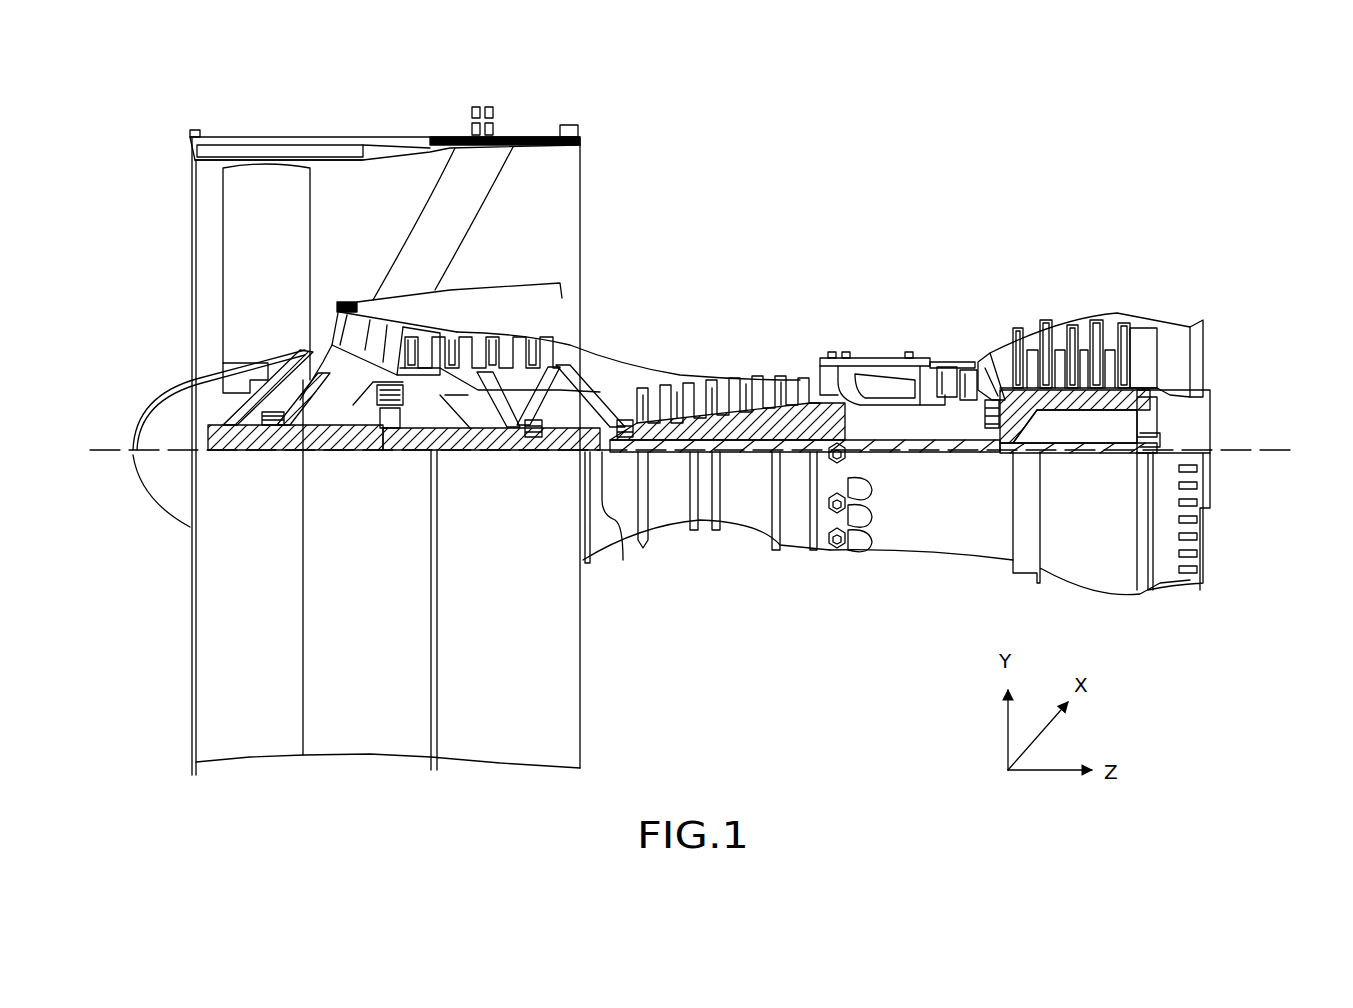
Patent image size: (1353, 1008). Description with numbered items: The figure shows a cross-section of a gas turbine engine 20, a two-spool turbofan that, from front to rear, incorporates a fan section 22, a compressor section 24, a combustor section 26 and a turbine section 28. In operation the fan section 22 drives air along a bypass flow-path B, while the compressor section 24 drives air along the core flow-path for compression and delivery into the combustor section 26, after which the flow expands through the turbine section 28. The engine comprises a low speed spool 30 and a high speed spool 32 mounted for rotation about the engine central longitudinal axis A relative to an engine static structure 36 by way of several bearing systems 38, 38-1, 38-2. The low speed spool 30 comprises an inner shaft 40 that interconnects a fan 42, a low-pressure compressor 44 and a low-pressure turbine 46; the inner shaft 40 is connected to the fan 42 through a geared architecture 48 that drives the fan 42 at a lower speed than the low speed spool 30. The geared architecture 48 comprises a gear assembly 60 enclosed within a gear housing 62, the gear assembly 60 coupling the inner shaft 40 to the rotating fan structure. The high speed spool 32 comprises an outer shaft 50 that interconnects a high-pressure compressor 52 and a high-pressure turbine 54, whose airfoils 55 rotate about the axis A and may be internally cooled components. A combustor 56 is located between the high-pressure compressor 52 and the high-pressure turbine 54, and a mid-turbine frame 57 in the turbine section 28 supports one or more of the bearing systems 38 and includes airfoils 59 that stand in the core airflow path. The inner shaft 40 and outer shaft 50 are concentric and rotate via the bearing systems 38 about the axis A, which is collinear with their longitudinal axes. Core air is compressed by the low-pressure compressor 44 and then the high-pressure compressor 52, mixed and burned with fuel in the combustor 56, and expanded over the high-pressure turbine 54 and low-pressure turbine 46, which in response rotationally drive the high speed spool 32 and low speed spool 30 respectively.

The gas turbine engine 20 is at (990, 152).
The fan section 22 is at (430, 114).
The compressor section 24 is at (440, 249).
The combustor section 26 is at (925, 249).
The turbine section 28 is at (1145, 249).
The low speed spool 30 is at (752, 458).
The high speed spool 32 is at (815, 378).
The engine static structure 36 is at (345, 745).
The bearing system 38 is at (984, 455).
The bearing system 38-1 is at (272, 450).
The bearing system 38-2 is at (532, 452).
The inner shaft 40 is at (605, 460).
The fan 42 is at (275, 264).
The low-pressure compressor 44 is at (545, 347).
The low-pressure turbine 46 is at (1097, 322).
The geared architecture 48 is at (397, 462).
The outer shaft 50 is at (863, 445).
The high-pressure compressor 52 is at (755, 398).
The high-pressure turbine 54 is at (945, 365).
The airfoil 55 is at (968, 368).
The combustor 56 is at (870, 383).
The mid-turbine frame 57 is at (996, 360).
The airfoils 59 is at (1032, 345).
The gear assembly 60 is at (440, 455).
The gear housing 62 is at (408, 392).
The engine central longitudinal axis A is at (113, 445).
The bypass flow-path B is at (398, 220).